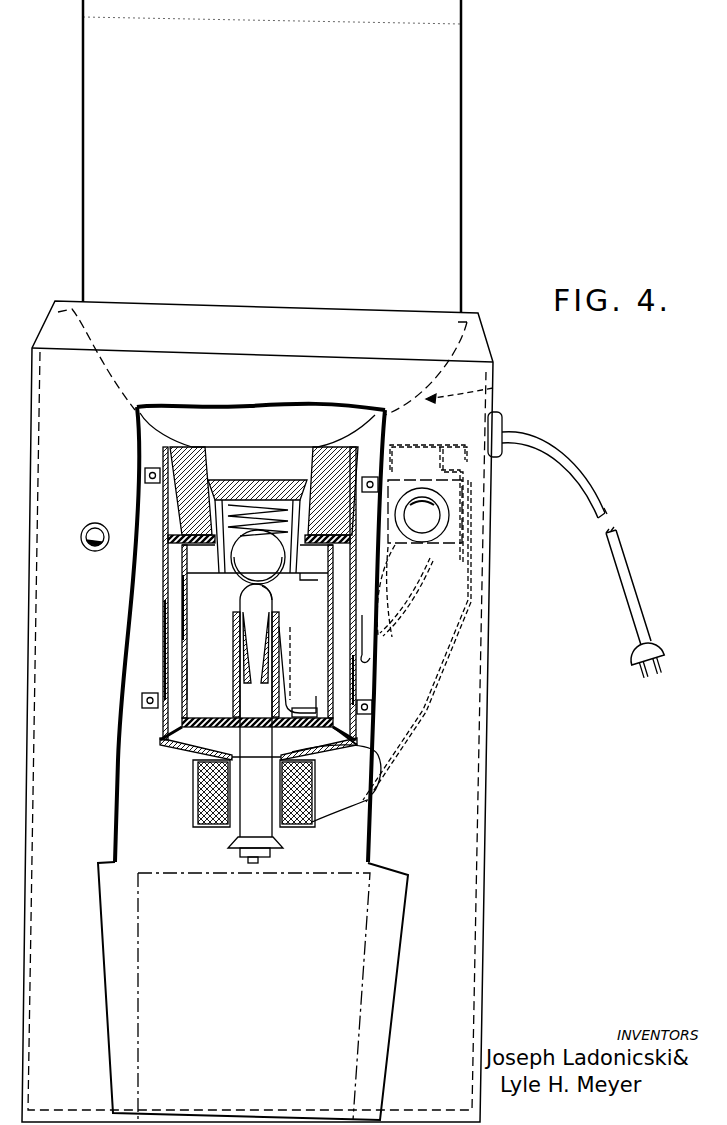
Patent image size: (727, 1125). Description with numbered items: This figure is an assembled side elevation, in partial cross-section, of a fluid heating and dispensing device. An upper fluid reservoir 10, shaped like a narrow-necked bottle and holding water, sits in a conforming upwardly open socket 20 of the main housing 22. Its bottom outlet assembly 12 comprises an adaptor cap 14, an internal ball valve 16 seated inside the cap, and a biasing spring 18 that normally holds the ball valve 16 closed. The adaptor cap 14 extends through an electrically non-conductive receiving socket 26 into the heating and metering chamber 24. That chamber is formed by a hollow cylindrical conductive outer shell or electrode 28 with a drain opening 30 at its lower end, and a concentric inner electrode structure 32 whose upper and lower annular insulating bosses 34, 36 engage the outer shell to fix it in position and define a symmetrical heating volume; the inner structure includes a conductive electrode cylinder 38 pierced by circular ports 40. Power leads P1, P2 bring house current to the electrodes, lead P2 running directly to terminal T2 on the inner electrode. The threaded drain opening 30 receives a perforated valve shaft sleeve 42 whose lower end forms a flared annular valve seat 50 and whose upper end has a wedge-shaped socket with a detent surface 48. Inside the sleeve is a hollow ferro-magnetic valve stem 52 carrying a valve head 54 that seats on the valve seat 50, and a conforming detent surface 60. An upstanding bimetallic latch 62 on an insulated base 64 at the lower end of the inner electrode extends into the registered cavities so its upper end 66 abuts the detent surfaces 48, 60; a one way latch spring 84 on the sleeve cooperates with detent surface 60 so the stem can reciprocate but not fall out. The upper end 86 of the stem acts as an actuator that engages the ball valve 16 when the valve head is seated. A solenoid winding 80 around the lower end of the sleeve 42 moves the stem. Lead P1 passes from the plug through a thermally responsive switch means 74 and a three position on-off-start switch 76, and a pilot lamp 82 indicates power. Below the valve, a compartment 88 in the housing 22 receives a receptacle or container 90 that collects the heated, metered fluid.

The upper fluid reservoir 10 is at (266, 96).
The bottom outlet assembly 12 is at (203, 559).
The adaptor cap 14 is at (257, 554).
The internal ball valve 16 is at (270, 566).
The biasing spring 18 is at (247, 510).
The upwardly open socket 20 is at (493, 389).
The main housing 22 is at (101, 693).
The heating and metering chamber 24 is at (223, 658).
The receiving socket 26 is at (190, 500).
The outer shell or electrode 28 is at (358, 679).
The drain opening 30 is at (358, 748).
The inner electrode structure 32 is at (179, 631).
The upper annular insulating boss 34 is at (178, 546).
The lower annular insulating boss 36 is at (172, 738).
The electrode cylinder 38 is at (183, 672).
The circular ports 40 is at (181, 615).
The valve shaft sleeve 42 is at (232, 690).
The detent surface 48 is at (283, 630).
The flared annular valve seat 50 is at (233, 840).
The hollow valve stem 52 is at (268, 709).
The valve head 54 is at (280, 848).
The detent surface 60 is at (287, 644).
The bimetallic latch 62 is at (282, 666).
The insulated base 64 is at (308, 707).
The upper end of latch 66 is at (256, 600).
The thermally responsive switch means 74 is at (372, 656).
The three position on-off-start switch 76 is at (440, 522).
The solenoid winding 80 is at (310, 806).
The pilot lamp 82 is at (96, 523).
The one way latch spring 84 is at (238, 637).
The upper end of valve stem 86 is at (270, 594).
The compartment 88 is at (379, 996).
The receptacle or container 90 is at (258, 1002).
The first power lead P1 is at (437, 464).
The second power lead P2 is at (442, 437).
The second terminal T2 is at (307, 585).